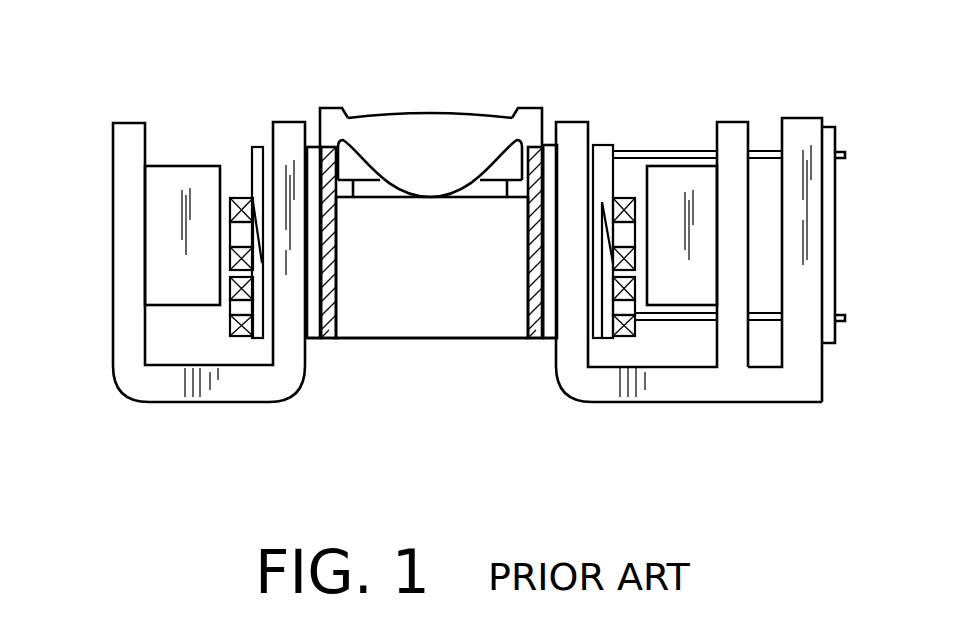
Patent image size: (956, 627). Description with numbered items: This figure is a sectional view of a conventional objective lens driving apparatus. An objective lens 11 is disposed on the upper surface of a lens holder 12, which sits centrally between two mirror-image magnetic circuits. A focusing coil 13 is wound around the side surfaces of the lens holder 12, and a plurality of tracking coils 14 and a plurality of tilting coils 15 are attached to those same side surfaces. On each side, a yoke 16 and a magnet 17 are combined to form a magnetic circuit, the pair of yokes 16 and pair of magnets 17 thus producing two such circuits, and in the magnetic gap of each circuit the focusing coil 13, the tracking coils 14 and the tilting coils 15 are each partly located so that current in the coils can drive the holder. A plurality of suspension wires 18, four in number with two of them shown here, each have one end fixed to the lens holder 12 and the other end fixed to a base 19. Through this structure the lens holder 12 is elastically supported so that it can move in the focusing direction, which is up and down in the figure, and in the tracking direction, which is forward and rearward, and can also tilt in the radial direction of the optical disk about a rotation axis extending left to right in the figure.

The objective lens 11 is at (442, 143).
The lens holder 12 is at (422, 297).
The focusing coil 13 is at (258, 238).
The tracking coils 14 is at (240, 197).
The tilting coils 15 is at (247, 340).
The yokes 16 is at (132, 288).
The magnets 17 is at (182, 212).
The suspension wires 18 is at (672, 150).
The base 19 is at (802, 351).